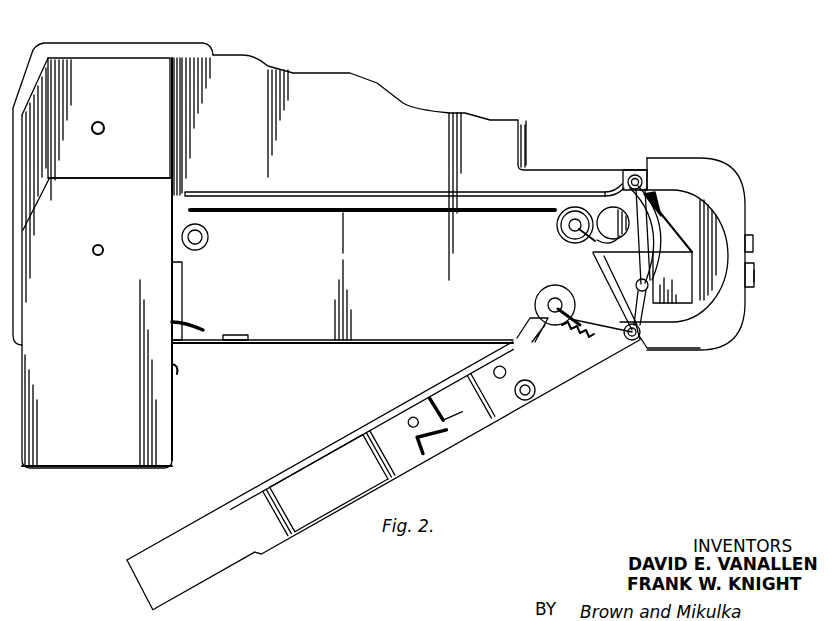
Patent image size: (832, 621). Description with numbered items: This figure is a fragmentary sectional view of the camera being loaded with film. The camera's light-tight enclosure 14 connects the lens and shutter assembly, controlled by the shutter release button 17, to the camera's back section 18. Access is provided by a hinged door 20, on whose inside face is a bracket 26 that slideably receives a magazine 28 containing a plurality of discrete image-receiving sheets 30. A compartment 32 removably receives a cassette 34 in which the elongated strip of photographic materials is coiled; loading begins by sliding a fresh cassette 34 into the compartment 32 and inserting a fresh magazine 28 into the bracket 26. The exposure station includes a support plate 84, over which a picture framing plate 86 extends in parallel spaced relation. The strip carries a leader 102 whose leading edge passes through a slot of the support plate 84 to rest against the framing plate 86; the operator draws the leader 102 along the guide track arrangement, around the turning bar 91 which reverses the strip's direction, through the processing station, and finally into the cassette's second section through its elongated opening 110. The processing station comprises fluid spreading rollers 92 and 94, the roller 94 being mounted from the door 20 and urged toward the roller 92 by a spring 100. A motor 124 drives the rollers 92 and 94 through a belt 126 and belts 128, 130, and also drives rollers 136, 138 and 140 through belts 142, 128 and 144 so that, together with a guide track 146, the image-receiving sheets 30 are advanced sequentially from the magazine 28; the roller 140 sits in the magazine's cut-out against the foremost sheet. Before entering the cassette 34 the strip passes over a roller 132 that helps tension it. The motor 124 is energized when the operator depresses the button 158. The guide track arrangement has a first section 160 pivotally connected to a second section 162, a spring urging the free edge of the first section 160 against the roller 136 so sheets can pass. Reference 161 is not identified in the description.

The light-tight enclosure 14 is at (102, 42).
The compartment 32 is at (147, 67).
The cassette 34 is at (148, 177).
The picture framing plate 86 is at (370, 191).
The support plate 84 is at (313, 213).
The roller 132 is at (207, 240).
The leader 102 is at (200, 336).
The elongated opening 110 is at (180, 373).
The fluid spreading roller 92 is at (570, 207).
The turning bar 91 is at (610, 207).
The roller 136 is at (638, 174).
The guide track 146 is at (720, 227).
The motor 124 is at (717, 302).
The second section 162 is at (672, 277).
The belt 142 is at (640, 248).
The first section 160 is at (653, 200).
The pawl arm 161 is at (652, 215).
The shutter release button 17 is at (749, 236).
The back section 18 is at (754, 263).
The button 158 is at (755, 280).
The belt 126 is at (597, 250).
The belt 130 is at (600, 292).
The roller 138 is at (638, 338).
The belt 128 is at (645, 333).
The fluid spreading roller 94 is at (535, 303).
The spring 100 is at (580, 350).
The belt 144 is at (573, 357).
The bracket 26 is at (280, 467).
The magazine 28 is at (335, 460).
The image-receiving sheets 30 is at (440, 437).
The roller 140 is at (530, 397).
The hinged door 20 is at (257, 562).